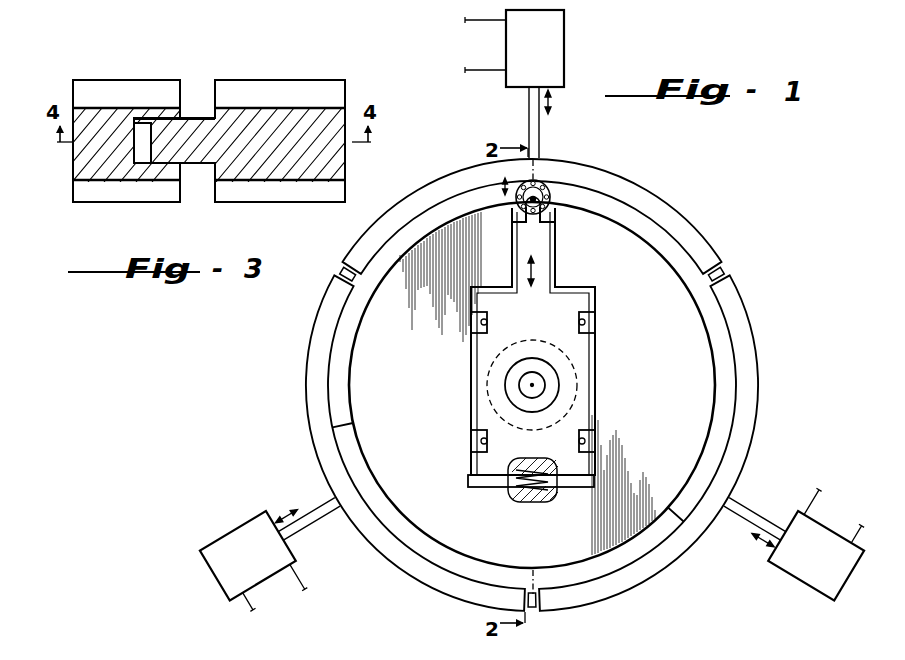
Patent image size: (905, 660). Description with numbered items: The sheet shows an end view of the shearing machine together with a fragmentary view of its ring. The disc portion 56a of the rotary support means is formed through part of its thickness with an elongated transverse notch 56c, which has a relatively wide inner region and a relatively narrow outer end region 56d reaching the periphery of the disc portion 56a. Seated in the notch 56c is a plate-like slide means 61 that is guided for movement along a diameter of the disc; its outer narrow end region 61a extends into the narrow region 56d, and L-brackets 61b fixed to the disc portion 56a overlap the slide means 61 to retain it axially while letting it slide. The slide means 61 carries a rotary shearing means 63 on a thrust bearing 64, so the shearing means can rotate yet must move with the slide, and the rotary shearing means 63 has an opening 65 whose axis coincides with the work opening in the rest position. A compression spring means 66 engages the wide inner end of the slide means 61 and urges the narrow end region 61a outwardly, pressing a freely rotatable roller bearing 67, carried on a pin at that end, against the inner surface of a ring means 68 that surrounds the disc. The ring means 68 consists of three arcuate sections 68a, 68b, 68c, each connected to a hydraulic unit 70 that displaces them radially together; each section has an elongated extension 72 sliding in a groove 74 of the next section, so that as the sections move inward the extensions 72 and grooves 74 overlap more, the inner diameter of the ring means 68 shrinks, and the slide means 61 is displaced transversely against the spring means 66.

In FIG. 1, the disc portion 56a is at (696, 365).
In FIG. 1, the notch 56c is at (480, 488).
In FIG. 1, the narrow end region of notch 56d is at (552, 253).
In FIG. 1, the slide means 61 is at (592, 346).
In FIG. 1, the narrow end region of slide means 61a is at (548, 271).
In FIG. 1, the L-brackets 61b is at (488, 322).
In FIG. 1, the rotary shearing means 63 is at (552, 393).
In FIG. 1, the thrust bearing 64 is at (568, 377).
In FIG. 1, the opening of rotary shearing means 65 is at (526, 390).
In FIG. 1, the spring means 66 is at (531, 498).
In FIG. 1, the roller bearing 67 is at (551, 193).
In FIG. 1, the ring means 68 is at (534, 399).
In FIG. 3, the arcuate section 68a is at (117, 88).
In FIG. 1, the arcuate section 68a is at (454, 605).
In FIG. 3, the arcuate section 68b is at (314, 90).
In FIG. 1, the arcuate section 68b is at (594, 599).
In FIG. 1, the arcuate section 68c is at (689, 222).
In FIG. 1, the hydraulic units 70 is at (564, 68).
In FIG. 3, the extension 72 is at (192, 128).
In FIG. 1, the extension 72 is at (537, 603).
In FIG. 3, the groove 74 is at (144, 161).